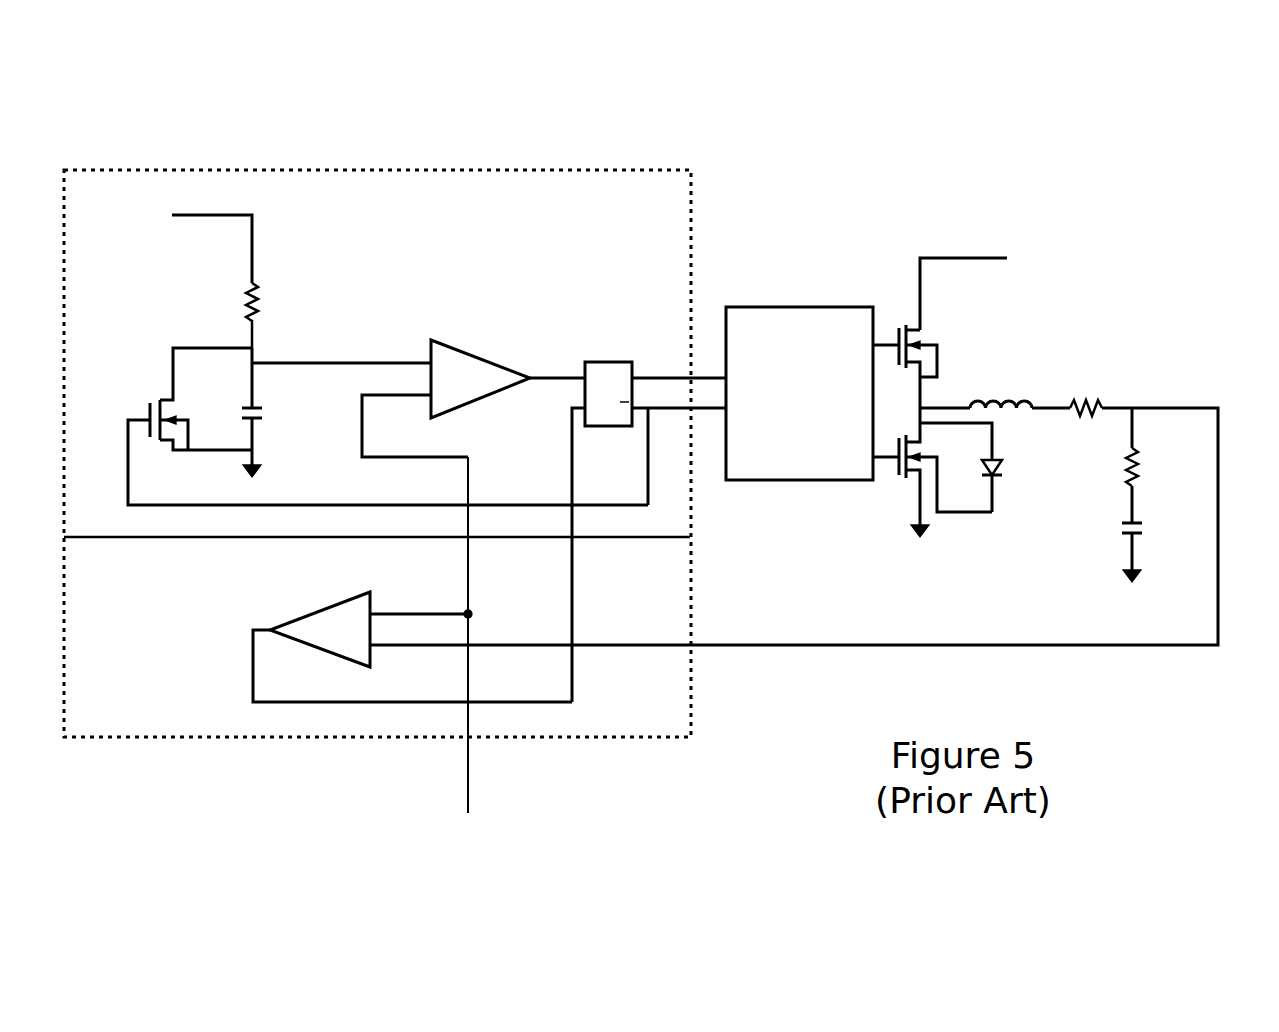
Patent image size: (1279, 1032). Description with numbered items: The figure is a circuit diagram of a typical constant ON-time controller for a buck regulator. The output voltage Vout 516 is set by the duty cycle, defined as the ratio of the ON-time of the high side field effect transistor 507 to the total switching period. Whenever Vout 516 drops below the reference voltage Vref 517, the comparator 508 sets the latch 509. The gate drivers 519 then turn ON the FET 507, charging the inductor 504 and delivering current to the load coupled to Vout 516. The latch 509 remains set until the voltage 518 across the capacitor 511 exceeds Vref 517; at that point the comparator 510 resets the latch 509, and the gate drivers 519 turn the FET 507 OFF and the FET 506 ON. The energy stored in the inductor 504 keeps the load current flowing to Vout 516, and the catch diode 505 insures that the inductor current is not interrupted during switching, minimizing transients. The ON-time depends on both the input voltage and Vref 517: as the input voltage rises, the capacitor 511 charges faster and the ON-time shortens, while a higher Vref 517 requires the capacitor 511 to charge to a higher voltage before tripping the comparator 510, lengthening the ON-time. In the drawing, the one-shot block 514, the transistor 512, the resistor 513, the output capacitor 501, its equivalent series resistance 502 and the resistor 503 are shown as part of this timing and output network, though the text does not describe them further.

The output capacitor C1 501 is at (1156, 521).
The equivalent series resistance ESR 502 is at (1140, 452).
The resistor R1 503 is at (1108, 390).
The inductor 504 is at (1007, 392).
The catch diode 505 is at (996, 467).
The field effect transistor 506 is at (892, 475).
The high side field effect transistor 507 is at (937, 350).
The comparator 508 is at (285, 622).
The latch 509 is at (640, 453).
The comparator 510 is at (492, 384).
The capacitor 511 is at (265, 408).
The transistor M3 512 is at (172, 346).
The resistor R2 513 is at (268, 280).
The one shot circuit 514 is at (320, 167).
The output voltage 516 is at (1218, 395).
The reference voltage 517 is at (470, 565).
The voltage across capacitor 518 is at (325, 352).
The gate drivers 519 is at (804, 307).